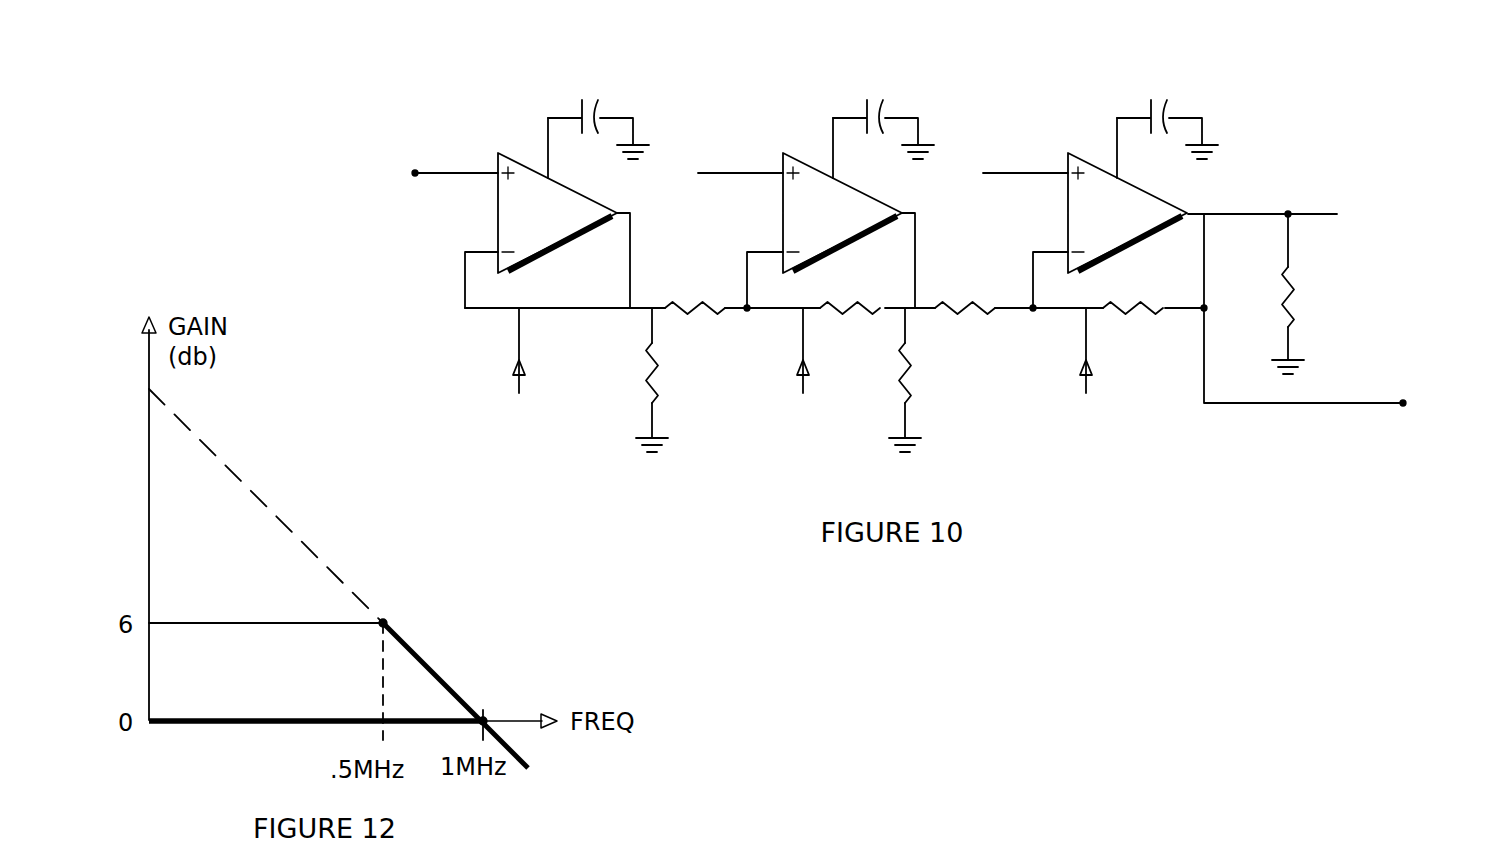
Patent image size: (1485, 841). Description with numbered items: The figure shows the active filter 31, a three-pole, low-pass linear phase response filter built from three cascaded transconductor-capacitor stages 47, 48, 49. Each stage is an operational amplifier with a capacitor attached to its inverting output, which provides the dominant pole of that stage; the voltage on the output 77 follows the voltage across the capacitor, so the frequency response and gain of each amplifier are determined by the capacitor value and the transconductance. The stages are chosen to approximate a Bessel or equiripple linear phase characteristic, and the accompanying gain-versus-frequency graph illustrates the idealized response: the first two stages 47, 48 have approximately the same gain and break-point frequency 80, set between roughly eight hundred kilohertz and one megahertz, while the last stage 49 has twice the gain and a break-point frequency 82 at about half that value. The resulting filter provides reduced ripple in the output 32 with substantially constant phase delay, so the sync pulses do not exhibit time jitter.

In FIG. 10, the active filter 31 is at (882, 30).
In FIG. 10, the first filter stage 47 is at (498, 212).
In FIG. 12, the first filter stage 47 is at (222, 720).
In FIG. 10, the second filter stage 48 is at (783, 212).
In FIG. 12, the second filter stage 48 is at (265, 723).
In FIG. 10, the third filter stage 49 is at (1068, 212).
In FIG. 12, the third filter stage 49 is at (268, 623).
In FIG. 10, the output 77 is at (1246, 214).
In FIG. 10, the output 32 is at (1403, 403).
In FIG. 12, the break-point frequency 82 is at (385, 620).
In FIG. 12, the break-point frequency 80 is at (488, 718).